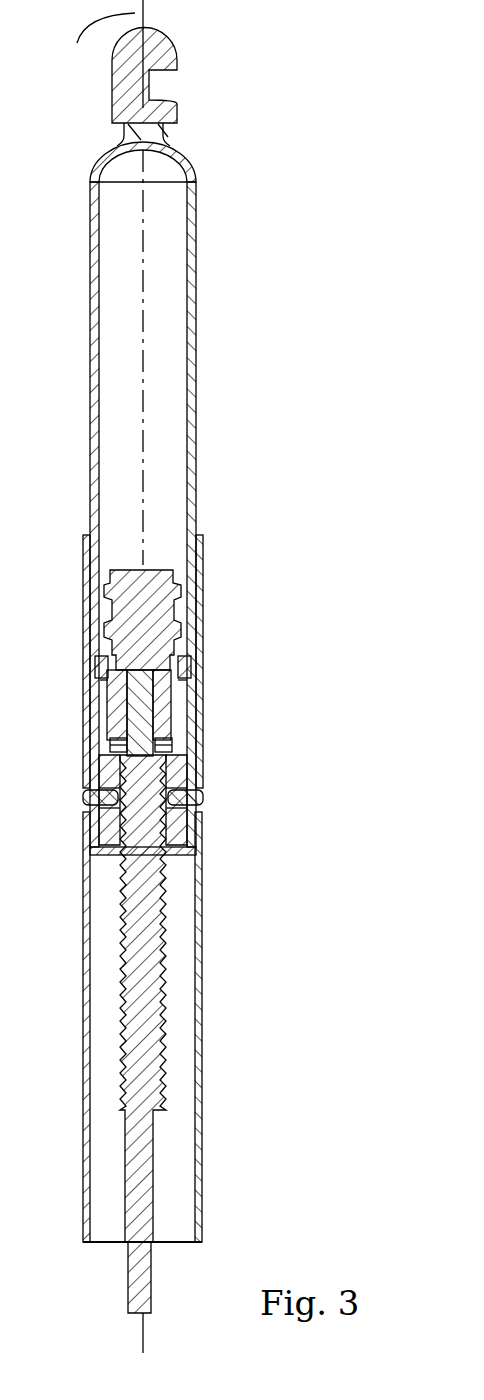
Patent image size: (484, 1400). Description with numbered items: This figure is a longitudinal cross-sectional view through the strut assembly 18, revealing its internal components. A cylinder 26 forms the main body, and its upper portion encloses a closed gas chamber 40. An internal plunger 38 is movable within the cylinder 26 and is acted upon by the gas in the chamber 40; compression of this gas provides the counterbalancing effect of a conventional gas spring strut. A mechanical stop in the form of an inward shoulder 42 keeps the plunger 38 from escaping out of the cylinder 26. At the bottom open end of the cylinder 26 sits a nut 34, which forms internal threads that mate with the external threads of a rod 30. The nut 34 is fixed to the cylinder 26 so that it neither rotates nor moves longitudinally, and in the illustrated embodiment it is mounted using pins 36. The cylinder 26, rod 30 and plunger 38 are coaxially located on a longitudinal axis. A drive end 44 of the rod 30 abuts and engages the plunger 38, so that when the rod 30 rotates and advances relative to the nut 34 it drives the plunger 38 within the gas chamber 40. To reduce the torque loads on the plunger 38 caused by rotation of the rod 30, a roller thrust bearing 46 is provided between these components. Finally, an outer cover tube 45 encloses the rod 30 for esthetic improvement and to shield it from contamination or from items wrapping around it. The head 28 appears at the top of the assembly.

The strut assembly 18 is at (245, 97).
The head / knob 28 is at (176, 46).
The closed gas chamber 40 is at (153, 280).
The cylinder 26 is at (197, 365).
The internal plunger 38 is at (188, 582).
The inward shoulder 42 is at (183, 674).
The drive end 44 is at (150, 722).
The roller thrust bearing 46 is at (168, 745).
The nut 34 is at (180, 778).
The pins 36 is at (84, 797).
The rod 30 is at (120, 925).
The outer cover tube 45 is at (200, 1010).